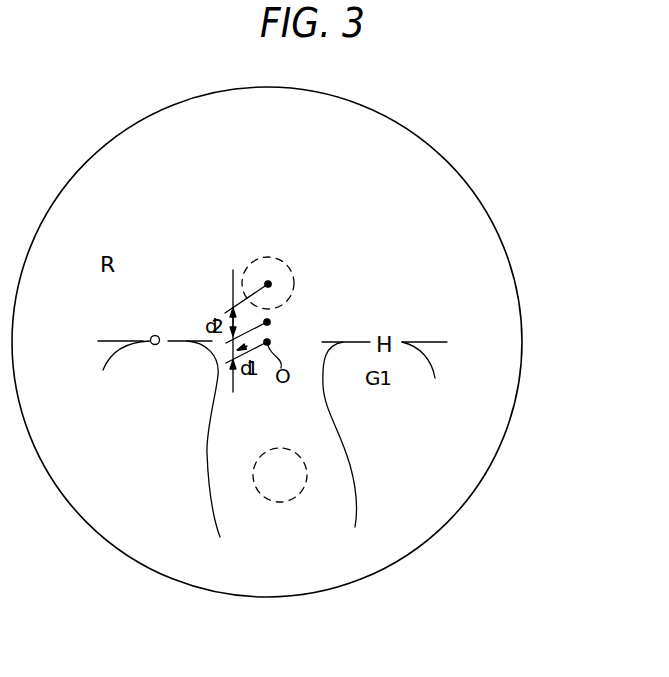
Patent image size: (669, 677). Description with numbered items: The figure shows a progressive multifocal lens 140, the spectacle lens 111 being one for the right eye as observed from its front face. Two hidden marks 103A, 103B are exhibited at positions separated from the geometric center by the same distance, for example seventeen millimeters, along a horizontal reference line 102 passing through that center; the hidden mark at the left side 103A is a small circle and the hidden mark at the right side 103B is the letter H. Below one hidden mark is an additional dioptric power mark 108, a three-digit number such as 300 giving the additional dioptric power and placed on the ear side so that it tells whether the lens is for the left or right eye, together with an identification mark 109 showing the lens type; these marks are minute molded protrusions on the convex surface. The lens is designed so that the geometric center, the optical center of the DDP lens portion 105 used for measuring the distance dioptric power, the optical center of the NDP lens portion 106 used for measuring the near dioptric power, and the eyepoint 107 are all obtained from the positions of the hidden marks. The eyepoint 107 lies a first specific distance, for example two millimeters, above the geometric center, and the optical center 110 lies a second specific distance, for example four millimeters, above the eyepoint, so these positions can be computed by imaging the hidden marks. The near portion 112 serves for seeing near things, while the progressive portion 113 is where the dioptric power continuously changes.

The progressive multifocal lens (HR) 140 is at (497, 200).
The spectacle lens 111 is at (342, 180).
The near portion 112 is at (307, 540).
The progressive portion 113 is at (262, 430).
The DDP lens portion 105 is at (272, 258).
The NDP lens portion 106 is at (282, 500).
The eyepoint 107 is at (271, 322).
The optical center 110 is at (266, 283).
The hidden mark at the left side 103A is at (159, 334).
The hidden mark at the right side 103B is at (385, 332).
The three-digit number 300 is at (155, 357).
The additional dioptric power mark 108 is at (157, 375).
The horizontal reference line 102 is at (425, 342).
The identification mark 109 is at (383, 388).